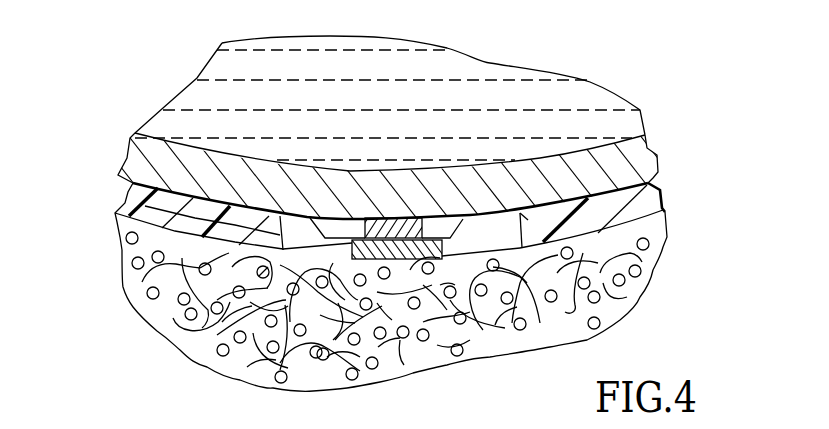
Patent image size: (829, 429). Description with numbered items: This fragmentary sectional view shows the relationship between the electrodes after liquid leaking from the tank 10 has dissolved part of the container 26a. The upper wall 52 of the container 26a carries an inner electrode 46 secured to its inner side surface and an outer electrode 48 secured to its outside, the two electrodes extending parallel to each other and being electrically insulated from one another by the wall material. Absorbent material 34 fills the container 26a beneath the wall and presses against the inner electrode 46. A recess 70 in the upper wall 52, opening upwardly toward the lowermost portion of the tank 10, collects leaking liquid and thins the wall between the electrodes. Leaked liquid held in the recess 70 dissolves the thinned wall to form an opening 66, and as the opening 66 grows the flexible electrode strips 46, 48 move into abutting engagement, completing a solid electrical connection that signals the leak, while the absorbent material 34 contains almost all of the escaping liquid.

The tank 10 is at (653, 147).
The container 26a is at (660, 189).
The upper wall 52 is at (648, 210).
The opening 66 is at (130, 212).
The recess 70 is at (340, 223).
The outer electrode 48 is at (408, 223).
The inner electrode 46 is at (400, 260).
The absorbent material 34 is at (613, 312).